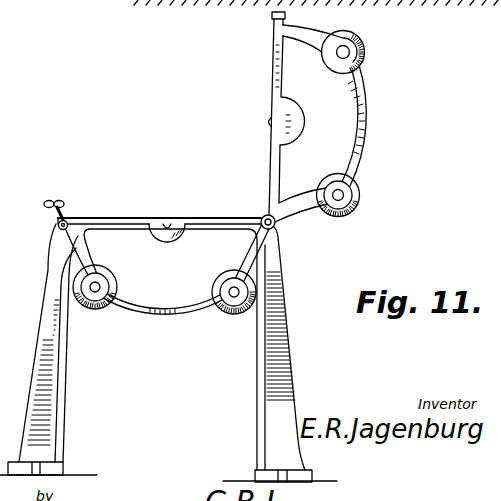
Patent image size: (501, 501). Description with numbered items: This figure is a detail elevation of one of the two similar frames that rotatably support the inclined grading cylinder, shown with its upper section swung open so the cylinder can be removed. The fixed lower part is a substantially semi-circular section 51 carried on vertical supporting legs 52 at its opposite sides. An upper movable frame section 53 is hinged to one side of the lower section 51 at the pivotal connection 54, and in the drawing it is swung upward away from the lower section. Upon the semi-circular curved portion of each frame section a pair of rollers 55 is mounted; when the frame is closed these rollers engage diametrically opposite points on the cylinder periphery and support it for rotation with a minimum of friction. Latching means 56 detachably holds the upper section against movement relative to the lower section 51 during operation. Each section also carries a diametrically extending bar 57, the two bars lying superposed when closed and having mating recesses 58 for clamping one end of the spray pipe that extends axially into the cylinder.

The lower semi-circular frame section 51 is at (168, 314).
The vertical supporting legs 52 is at (60, 408).
The upper movable frame section 53 is at (368, 123).
The hinge connection 54 is at (275, 227).
The rollers 55 is at (367, 53).
The latching means 56 is at (52, 212).
The diametrically extending bar 57 is at (103, 222).
The mating recesses 58 is at (270, 122).